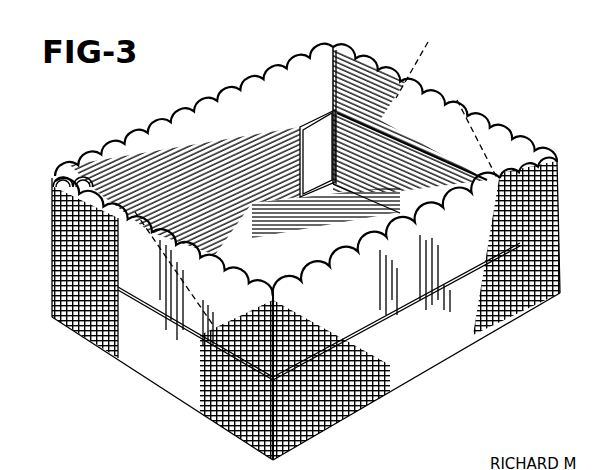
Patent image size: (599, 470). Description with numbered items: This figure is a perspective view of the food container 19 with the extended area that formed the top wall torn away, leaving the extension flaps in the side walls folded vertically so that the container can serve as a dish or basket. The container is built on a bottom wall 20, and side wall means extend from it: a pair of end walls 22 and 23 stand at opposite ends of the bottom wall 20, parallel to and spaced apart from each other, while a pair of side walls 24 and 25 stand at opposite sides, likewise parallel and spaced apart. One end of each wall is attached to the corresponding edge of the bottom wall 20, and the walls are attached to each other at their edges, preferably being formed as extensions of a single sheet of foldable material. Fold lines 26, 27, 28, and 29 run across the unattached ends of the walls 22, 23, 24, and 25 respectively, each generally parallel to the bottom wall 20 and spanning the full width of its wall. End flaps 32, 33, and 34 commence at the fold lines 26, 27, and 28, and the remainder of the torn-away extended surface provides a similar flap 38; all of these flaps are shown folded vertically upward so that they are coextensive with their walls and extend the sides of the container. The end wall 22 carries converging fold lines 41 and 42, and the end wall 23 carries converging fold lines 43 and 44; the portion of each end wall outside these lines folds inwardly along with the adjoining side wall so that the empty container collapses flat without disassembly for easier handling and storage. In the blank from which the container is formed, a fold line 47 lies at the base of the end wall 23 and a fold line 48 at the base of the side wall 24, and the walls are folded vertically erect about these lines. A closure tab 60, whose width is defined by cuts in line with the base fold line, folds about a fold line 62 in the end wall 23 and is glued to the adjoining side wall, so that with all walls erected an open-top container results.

The food container 19 is at (503, 55).
The bottom wall 20 is at (318, 257).
The end wall 22 is at (160, 373).
The end wall 23 is at (416, 182).
The side wall 24 is at (240, 183).
The side wall 25 is at (446, 353).
The fold line 26 is at (152, 316).
The fold line 27 is at (497, 176).
The fold line 28 is at (272, 132).
The fold line 29 is at (428, 302).
The end flap 32 is at (90, 160).
The end flap 33 is at (465, 160).
The end flap 34 is at (213, 93).
The flap 38 is at (470, 181).
The converging fold line 41 is at (207, 330).
The converging fold line 42 is at (95, 231).
The converging fold line 43 is at (458, 97).
The converging fold line 44 is at (446, 99).
The fold line 47 is at (400, 210).
The fold line 48 is at (260, 220).
The closure tab 60 is at (313, 133).
The fold line 62 is at (335, 113).